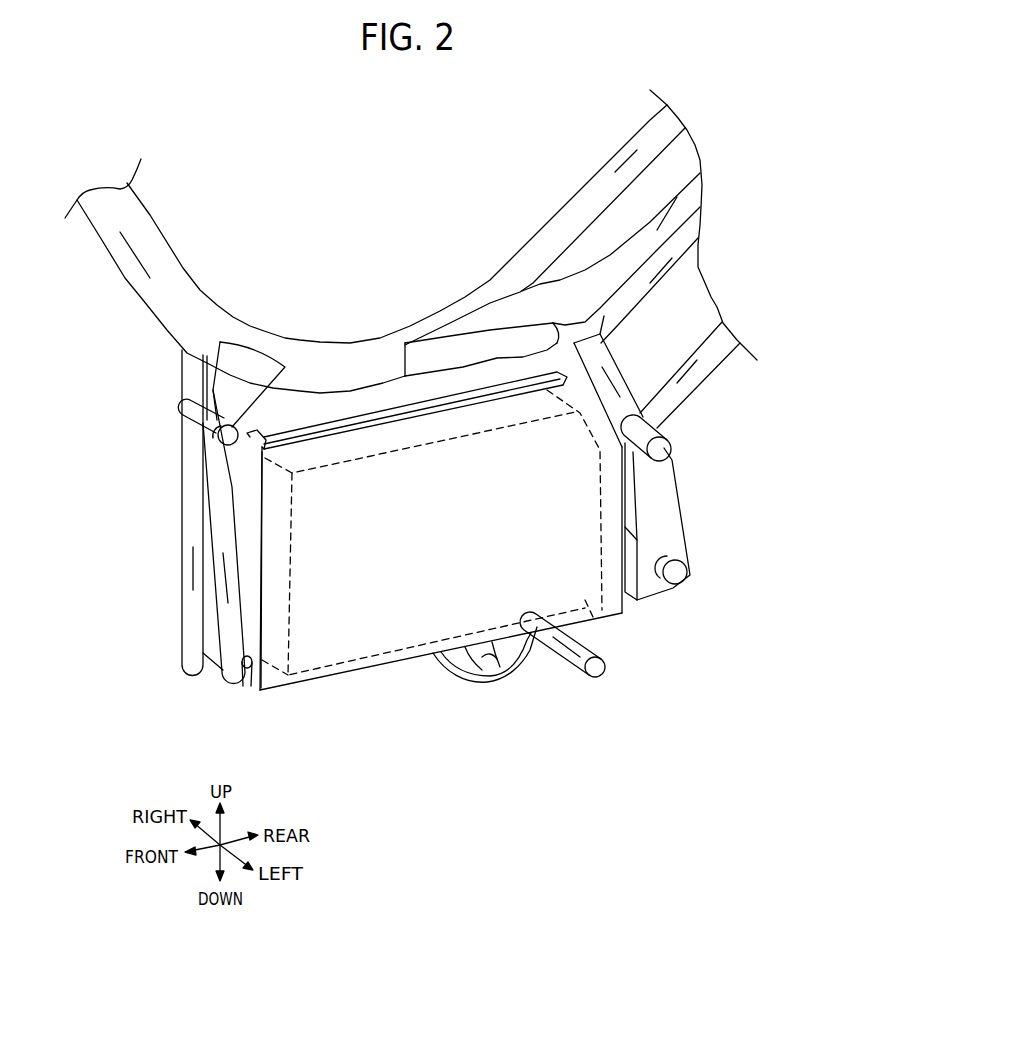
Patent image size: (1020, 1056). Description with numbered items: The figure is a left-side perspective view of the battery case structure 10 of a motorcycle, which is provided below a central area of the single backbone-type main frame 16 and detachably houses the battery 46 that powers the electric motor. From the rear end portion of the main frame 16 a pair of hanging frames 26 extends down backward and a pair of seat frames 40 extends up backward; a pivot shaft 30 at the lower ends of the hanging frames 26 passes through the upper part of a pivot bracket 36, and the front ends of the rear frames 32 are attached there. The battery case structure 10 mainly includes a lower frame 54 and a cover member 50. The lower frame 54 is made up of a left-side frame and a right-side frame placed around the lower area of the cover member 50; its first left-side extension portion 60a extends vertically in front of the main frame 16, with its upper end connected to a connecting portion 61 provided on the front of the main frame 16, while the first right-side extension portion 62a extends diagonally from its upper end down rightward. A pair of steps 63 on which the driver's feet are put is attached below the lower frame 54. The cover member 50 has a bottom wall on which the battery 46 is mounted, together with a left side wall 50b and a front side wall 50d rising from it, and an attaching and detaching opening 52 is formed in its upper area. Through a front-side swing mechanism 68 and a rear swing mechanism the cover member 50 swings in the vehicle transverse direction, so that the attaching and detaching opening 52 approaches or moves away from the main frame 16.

The battery case structure 10 is at (450, 703).
The main frame 16 is at (152, 215).
The hanging frames 26 is at (620, 382).
The pivot shaft 30 is at (662, 435).
The rear frames 32 is at (660, 290).
The pivot bracket 36 is at (667, 503).
The seat frames 40 is at (638, 236).
The battery 46 is at (598, 620).
The cover member 50 is at (343, 637).
The left side wall 50b is at (393, 640).
The front side wall 50d is at (253, 620).
The attaching and detaching opening 52 is at (386, 414).
The lower frame 54 is at (175, 524).
The first left-side extension portion 60a is at (227, 680).
The connecting portion 61 is at (202, 380).
The first right-side extension portion 62a is at (192, 622).
The steps 63 is at (577, 667).
The front-side swing mechanism 68 is at (248, 688).